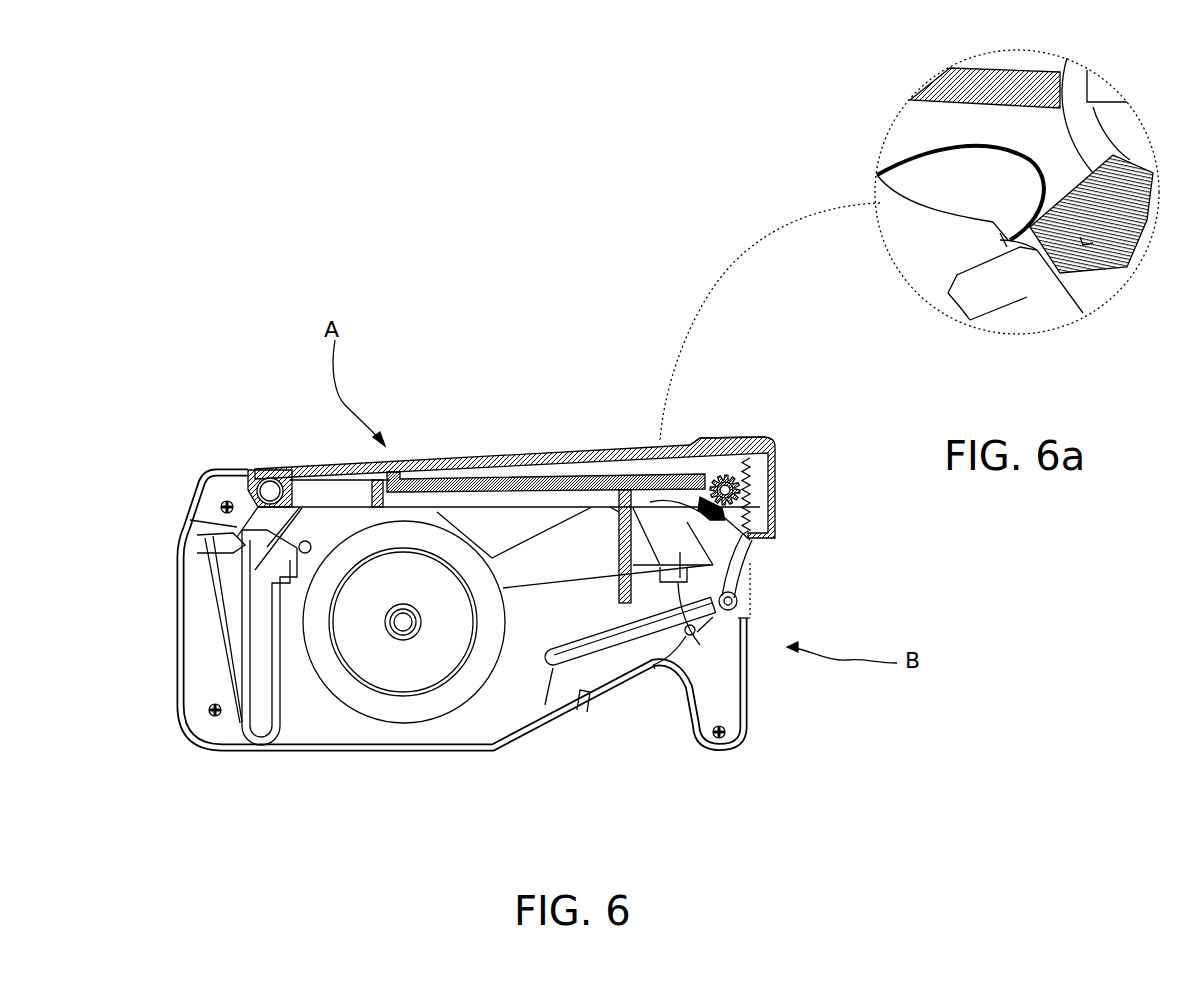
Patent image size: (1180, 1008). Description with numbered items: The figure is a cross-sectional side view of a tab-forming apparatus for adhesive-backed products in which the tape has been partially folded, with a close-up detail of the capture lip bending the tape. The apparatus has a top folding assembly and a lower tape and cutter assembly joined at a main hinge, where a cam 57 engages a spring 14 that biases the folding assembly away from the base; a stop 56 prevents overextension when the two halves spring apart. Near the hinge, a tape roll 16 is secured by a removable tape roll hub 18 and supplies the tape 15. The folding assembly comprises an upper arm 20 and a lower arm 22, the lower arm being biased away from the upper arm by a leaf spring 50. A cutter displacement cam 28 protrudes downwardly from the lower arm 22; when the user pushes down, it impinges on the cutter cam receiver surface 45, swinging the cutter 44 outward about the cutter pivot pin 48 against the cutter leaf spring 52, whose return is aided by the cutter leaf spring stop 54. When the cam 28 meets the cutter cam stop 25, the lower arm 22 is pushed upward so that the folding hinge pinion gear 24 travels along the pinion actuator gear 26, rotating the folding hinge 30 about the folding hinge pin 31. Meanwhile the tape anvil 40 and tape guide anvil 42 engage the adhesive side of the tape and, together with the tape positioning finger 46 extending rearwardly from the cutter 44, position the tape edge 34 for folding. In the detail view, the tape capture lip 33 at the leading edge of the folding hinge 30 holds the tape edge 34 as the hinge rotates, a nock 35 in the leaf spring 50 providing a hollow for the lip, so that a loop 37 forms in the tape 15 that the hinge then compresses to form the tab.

In FIG. 6, the spring 14 is at (222, 540).
In FIG. 6, the tape 15 is at (500, 479).
In FIG. 6, the tape roll 16 is at (400, 707).
In FIG. 6, the removable tape roll hub 18 is at (404, 640).
In FIG. 6, the upper arm 20 is at (335, 478).
In FIG. 6, the lower arm 22 is at (322, 494).
In FIG. 6, the folding hinge pinion gear 24 is at (774, 437).
In FIG. 6, the cutter cam stop 25 is at (652, 666).
In FIG. 6, the pinion actuator gear 26 is at (778, 500).
In FIG. 6, the cutter displacement cam 28 is at (700, 635).
In FIG. 6, the folding hinge 30 is at (756, 545).
In FIG. 6a, the folding hinge 30 is at (1083, 233).
In FIG. 6, the folding hinge pin 31 is at (720, 437).
In FIG. 6a, the tape capture lip 33 is at (1000, 233).
In FIG. 6a, the tape edge 34 is at (877, 173).
In FIG. 6a, the nock 35 is at (917, 100).
In FIG. 6a, the loop 37 is at (993, 142).
In FIG. 6, the tape anvil 40 is at (536, 530).
In FIG. 6, the tape guide anvil 42 is at (652, 505).
In FIG. 6, the cutter 44 is at (740, 533).
In FIG. 6, the cutter cam receiver surface 45 is at (738, 565).
In FIG. 6a, the tape positioning finger 46 is at (1023, 295).
In FIG. 6, the cutter pivot pin 48 is at (737, 600).
In FIG. 6, the leaf spring 50 is at (493, 465).
In FIG. 6, the cutter leaf spring 52 is at (553, 670).
In FIG. 6, the cutter leaf spring stop 54 is at (583, 700).
In FIG. 6, the stop 56 is at (302, 508).
In FIG. 6, the cam 57 is at (267, 530).